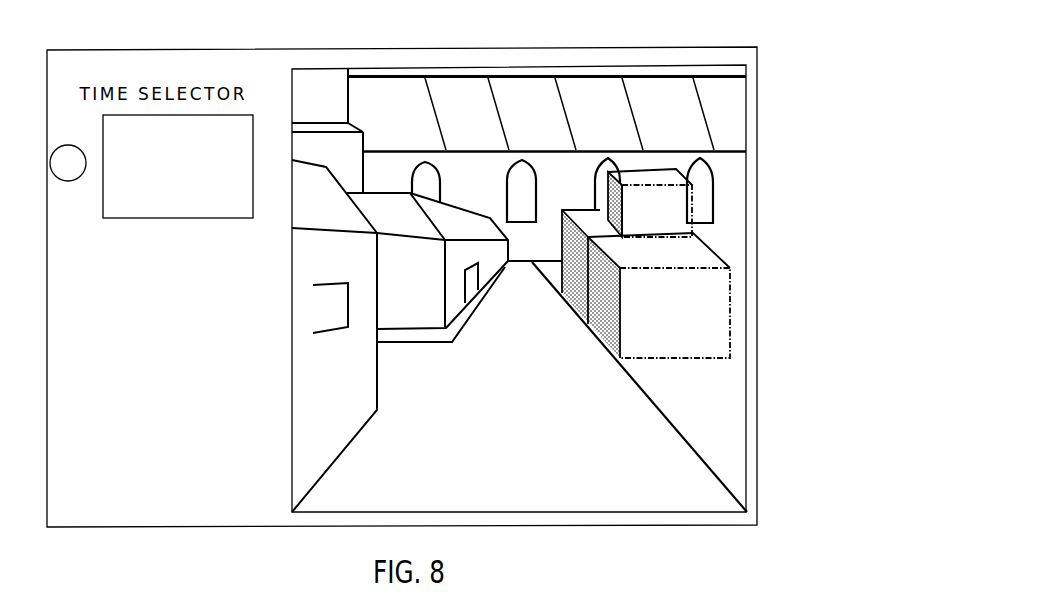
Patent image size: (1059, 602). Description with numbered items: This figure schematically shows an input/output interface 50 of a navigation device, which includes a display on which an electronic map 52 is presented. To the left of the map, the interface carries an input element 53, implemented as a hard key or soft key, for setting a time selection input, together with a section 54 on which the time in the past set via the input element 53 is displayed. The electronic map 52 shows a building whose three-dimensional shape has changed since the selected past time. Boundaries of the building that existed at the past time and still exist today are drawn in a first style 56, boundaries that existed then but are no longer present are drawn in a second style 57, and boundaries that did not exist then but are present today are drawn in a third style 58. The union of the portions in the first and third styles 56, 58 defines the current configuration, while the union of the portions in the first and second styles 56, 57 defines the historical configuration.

The input/output interface 50 is at (737, 525).
The electronic map 52 is at (541, 264).
The input element 53 is at (70, 145).
The section 54 is at (103, 180).
The first style 56 is at (625, 286).
The second style 57 is at (600, 337).
The third style 58 is at (692, 230).